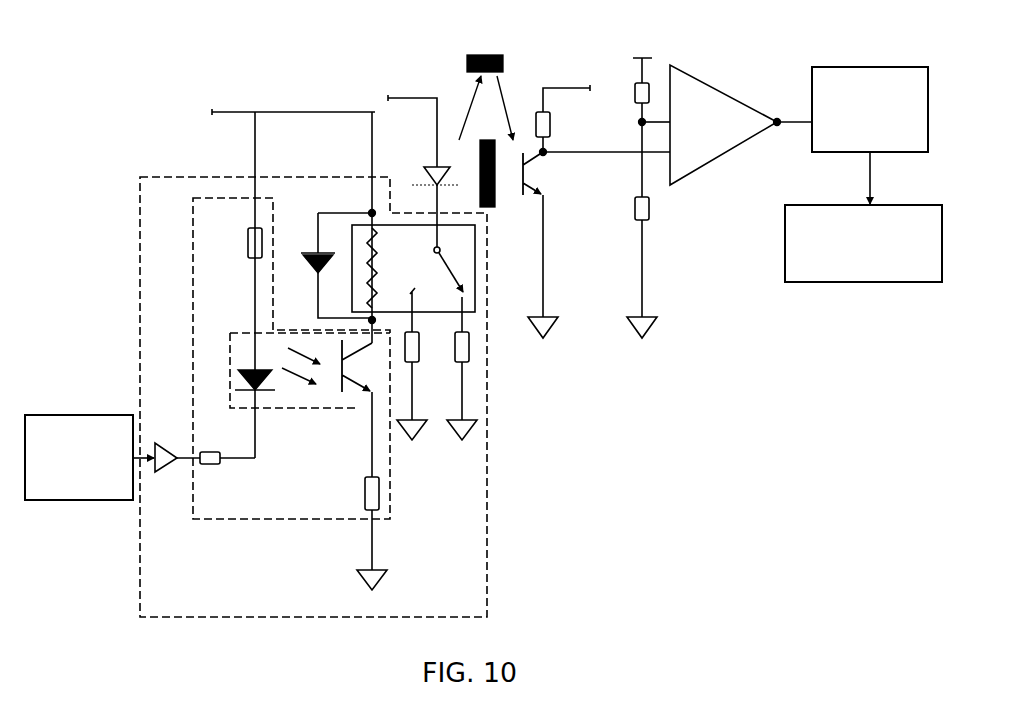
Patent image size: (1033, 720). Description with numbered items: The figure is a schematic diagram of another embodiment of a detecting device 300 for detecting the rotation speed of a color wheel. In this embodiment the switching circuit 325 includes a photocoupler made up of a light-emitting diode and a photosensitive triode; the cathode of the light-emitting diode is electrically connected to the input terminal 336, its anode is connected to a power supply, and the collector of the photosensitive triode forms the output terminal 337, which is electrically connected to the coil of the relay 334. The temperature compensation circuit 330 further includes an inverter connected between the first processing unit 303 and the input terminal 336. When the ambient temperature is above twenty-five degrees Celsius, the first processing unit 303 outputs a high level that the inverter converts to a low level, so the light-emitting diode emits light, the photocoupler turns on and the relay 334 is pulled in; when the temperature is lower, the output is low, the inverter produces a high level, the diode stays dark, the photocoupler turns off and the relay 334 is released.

The detecting device 300 is at (240, 55).
The first processing unit 303 is at (78, 413).
The switching circuit 325 is at (392, 495).
The temperature compensation circuit 330 is at (168, 176).
The relay 334 is at (480, 322).
The input terminal 336 is at (185, 462).
The output terminal 337 is at (326, 323).